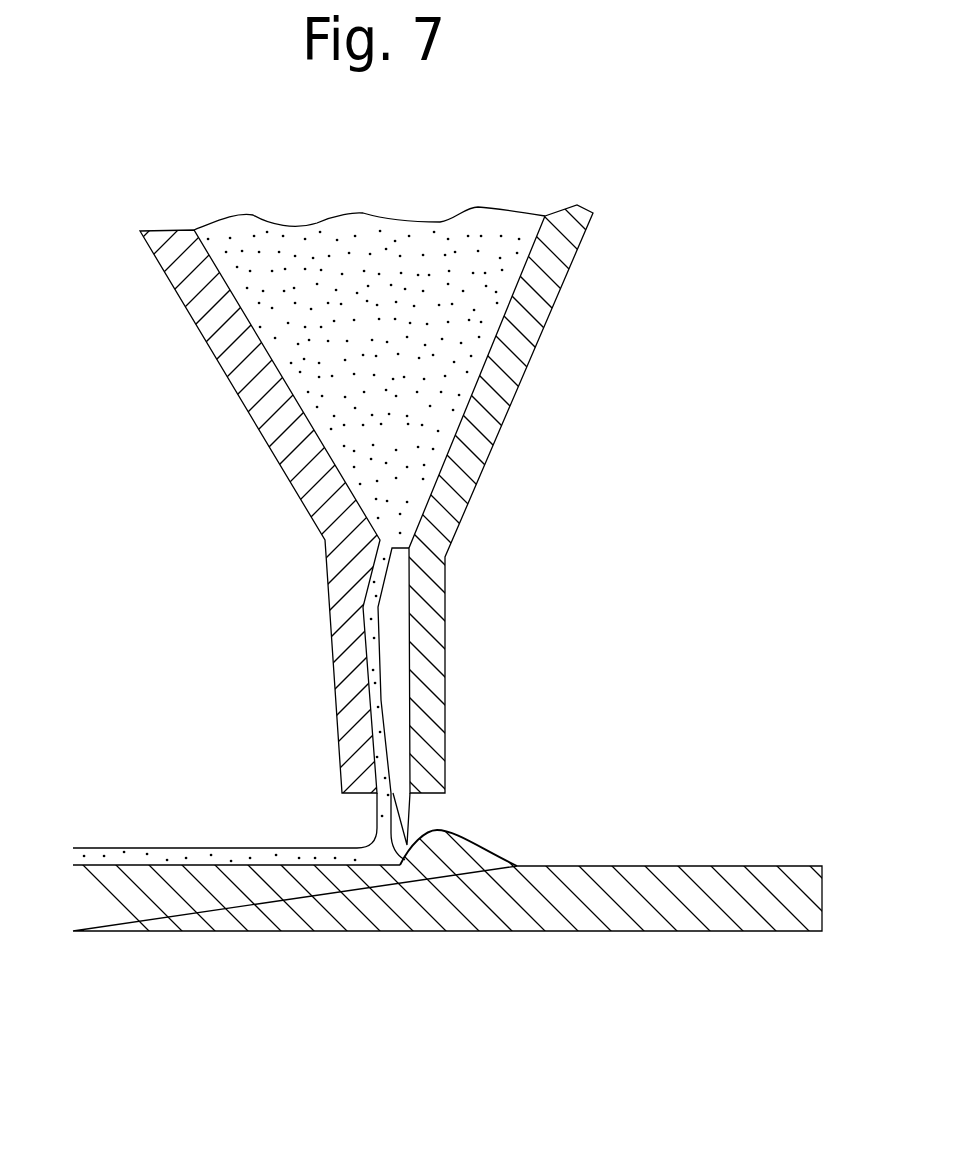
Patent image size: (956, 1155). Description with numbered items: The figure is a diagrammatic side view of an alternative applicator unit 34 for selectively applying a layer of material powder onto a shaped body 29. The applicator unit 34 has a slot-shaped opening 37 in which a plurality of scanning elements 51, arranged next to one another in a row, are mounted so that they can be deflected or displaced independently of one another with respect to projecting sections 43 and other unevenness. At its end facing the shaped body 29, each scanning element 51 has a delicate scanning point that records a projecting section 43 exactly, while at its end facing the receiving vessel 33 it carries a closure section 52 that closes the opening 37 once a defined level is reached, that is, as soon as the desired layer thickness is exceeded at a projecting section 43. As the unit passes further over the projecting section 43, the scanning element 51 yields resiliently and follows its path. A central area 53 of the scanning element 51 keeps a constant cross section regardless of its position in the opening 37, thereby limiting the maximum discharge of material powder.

The shaped body 29 is at (462, 914).
The receiving vessel 33 is at (485, 316).
The applicator unit 34 is at (478, 500).
The slot-shaped opening 37 is at (352, 813).
The projecting section 43 is at (448, 848).
The scanning element 51 is at (429, 808).
The closure section 52 is at (411, 577).
The central area 53 is at (396, 674).